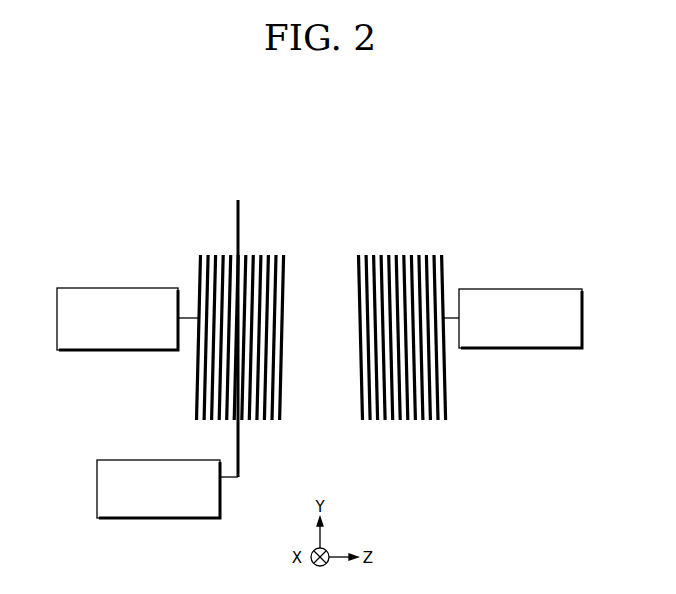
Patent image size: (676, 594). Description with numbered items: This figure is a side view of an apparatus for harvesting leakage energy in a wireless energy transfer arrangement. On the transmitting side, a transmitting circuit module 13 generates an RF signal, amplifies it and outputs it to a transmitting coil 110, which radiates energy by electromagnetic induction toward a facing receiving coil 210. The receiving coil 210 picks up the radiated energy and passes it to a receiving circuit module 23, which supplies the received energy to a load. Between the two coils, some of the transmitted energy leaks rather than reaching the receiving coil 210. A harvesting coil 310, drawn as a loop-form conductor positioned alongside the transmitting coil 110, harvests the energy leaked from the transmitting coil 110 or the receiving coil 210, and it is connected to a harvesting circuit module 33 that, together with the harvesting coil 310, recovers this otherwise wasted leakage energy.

The transmitting circuit module 13 is at (118, 288).
The receiving circuit module 23 is at (520, 289).
The harvesting circuit module 33 is at (135, 460).
The transmitting coil 110 is at (287, 267).
The receiving coil 210 is at (385, 258).
The harvesting coil 310 is at (240, 223).